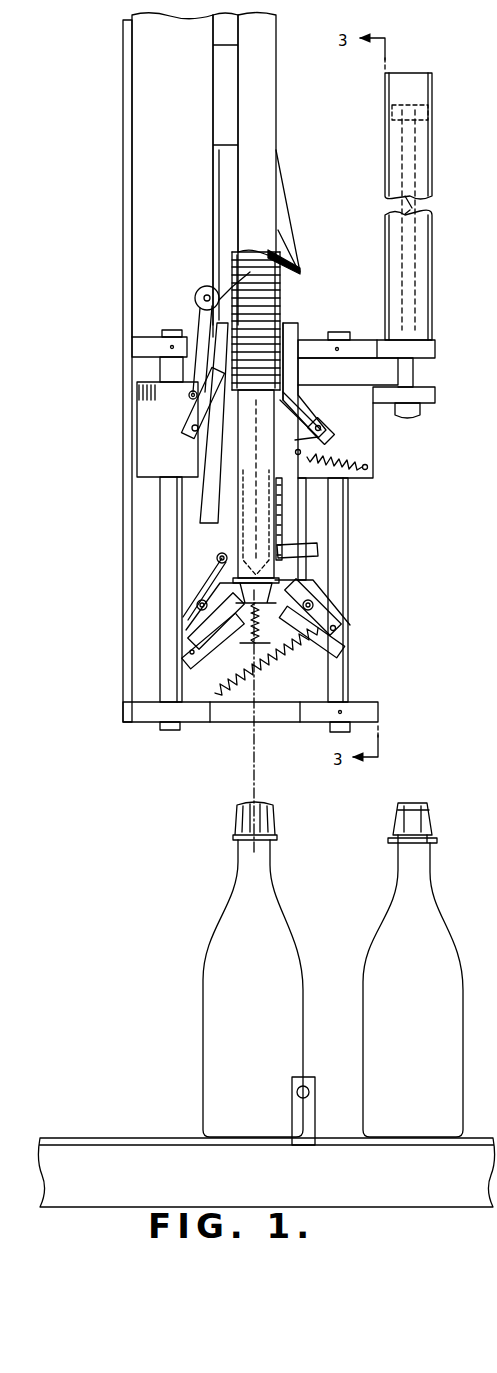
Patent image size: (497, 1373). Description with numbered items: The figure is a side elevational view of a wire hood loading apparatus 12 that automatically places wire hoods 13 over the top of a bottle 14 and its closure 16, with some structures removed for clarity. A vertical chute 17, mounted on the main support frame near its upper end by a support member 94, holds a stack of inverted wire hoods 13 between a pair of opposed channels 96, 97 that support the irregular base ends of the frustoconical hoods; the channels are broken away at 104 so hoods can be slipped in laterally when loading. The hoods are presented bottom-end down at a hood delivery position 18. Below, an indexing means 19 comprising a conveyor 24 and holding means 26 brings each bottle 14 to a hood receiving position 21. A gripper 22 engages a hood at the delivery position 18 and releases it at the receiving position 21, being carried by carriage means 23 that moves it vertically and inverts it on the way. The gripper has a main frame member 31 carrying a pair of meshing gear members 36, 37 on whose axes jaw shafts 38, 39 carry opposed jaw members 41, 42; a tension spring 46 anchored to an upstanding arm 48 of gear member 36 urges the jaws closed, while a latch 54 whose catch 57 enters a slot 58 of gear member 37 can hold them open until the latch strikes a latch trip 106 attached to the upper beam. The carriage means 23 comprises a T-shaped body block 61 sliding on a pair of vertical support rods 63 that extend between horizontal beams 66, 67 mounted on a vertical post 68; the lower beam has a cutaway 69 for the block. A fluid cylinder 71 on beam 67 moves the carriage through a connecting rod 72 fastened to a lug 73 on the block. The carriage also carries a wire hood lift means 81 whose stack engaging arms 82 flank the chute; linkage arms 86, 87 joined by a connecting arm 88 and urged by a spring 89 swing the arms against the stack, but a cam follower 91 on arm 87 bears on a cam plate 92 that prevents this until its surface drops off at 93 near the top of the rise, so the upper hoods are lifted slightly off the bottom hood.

The wire hood loading apparatus 12 is at (100, 568).
The wire hood 13 is at (281, 302).
The bottle 14 is at (230, 925).
The closure 16 is at (276, 818).
The chute 17 is at (279, 153).
The hood delivery position 18 is at (300, 582).
The indexing means 19 is at (160, 1088).
The hood receiving position 21 is at (234, 810).
The gripper 22 is at (190, 628).
The carriage means 23 is at (135, 425).
The conveyor 24 is at (108, 1138).
The holding means 26 is at (312, 1078).
The main frame member 31 is at (250, 645).
The gear member 36 is at (320, 596).
The gear member 37 is at (208, 578).
The jaw shaft 38 is at (322, 606).
The jaw shaft 39 is at (196, 605).
The jaw member 41 is at (324, 616).
The jaw member 42 is at (193, 641).
The spring 46 is at (278, 674).
The upstanding arm 48 is at (337, 629).
The latch 54 is at (318, 552).
The catch 57 is at (218, 555).
The slot 58 is at (206, 562).
The body block 61 is at (371, 452).
The vertical support rod 63 is at (162, 580).
The horizontal beam 66 is at (379, 711).
The horizontal beam 67 is at (436, 350).
The main vertical beam 68 is at (123, 286).
The cutaway 69 is at (296, 720).
The fluid cylinder 71 is at (431, 287).
The connecting rod 72 is at (414, 373).
The lug 73 is at (437, 400).
The wire hood lift means 81 is at (300, 327).
The stack engaging arm 82 is at (191, 413).
The linkage arm 86 is at (326, 428).
The linkage arm 87 is at (189, 393).
The connecting arm 88 is at (316, 410).
The spring 89 is at (337, 458).
The cam follower 91 is at (195, 296).
The cam plate 92 is at (200, 452).
The drop off 93 is at (199, 325).
The support member 94 is at (213, 93).
The channel 96 is at (270, 210).
The channel 97 is at (250, 272).
The break-away 104 is at (296, 279).
The latch trip 106 is at (276, 532).